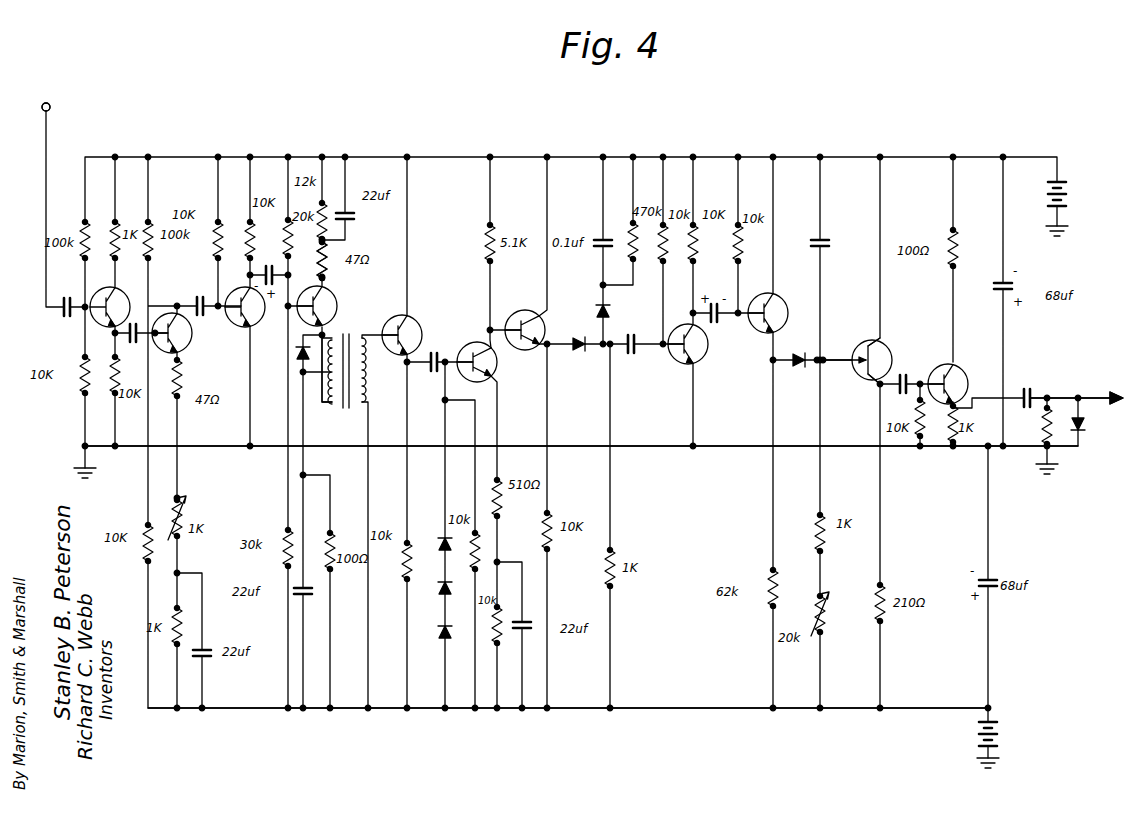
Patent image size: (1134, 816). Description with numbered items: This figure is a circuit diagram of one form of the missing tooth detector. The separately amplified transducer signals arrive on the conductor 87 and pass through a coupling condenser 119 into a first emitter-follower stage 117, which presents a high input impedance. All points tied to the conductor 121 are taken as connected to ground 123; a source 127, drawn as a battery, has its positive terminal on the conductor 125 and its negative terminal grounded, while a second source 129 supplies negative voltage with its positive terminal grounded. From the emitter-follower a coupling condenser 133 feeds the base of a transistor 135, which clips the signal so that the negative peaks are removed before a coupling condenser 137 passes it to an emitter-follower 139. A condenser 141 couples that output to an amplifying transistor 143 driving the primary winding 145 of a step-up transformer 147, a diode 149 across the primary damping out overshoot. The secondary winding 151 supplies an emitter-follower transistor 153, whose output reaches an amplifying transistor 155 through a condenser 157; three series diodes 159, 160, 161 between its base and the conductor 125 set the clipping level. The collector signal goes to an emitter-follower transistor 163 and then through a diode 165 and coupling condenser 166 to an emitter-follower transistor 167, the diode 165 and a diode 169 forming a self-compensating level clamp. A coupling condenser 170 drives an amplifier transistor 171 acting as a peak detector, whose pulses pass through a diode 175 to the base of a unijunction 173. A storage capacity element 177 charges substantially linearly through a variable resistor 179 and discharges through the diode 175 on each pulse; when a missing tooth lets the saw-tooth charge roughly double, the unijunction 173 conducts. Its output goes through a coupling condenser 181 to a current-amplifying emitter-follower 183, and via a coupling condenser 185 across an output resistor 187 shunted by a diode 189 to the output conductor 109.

The conductor 87 is at (46, 150).
The output conductor 109 is at (1098, 397).
The first emitter-follower stage 117 is at (102, 288).
The coupling condenser 119 is at (66, 300).
The conductor 121 is at (120, 448).
The ground 123 is at (86, 478).
The conductor 125 is at (205, 710).
The source 127 is at (998, 736).
The source 129 is at (1066, 194).
The coupling condenser 133 is at (142, 324).
The transistor 135 is at (192, 347).
The coupling condenser 137 is at (199, 296).
The emitter-follower 139 is at (240, 327).
The condenser 141 is at (269, 266).
The amplifying transistor 143 is at (321, 304).
The primary winding 145 is at (326, 278).
The transformer 147 is at (346, 408).
The diode 149 is at (300, 354).
The secondary winding 151 is at (330, 336).
The emitter-follower transistor 153 is at (412, 330).
The amplifying transistor 155 is at (486, 360).
The condenser 157 is at (438, 349).
The diode 159 is at (440, 545).
The diode 160 is at (440, 590).
The diode 161 is at (440, 634).
The transistor 163 is at (535, 328).
The diode 165 is at (579, 352).
The coupling condenser 166 is at (633, 355).
The transistor 167 is at (702, 348).
The diode 169 is at (600, 310).
The coupling condenser 170 is at (715, 303).
The amplifier transistor 171 is at (780, 309).
The unijunction 173 is at (856, 378).
The diode 175 is at (799, 367).
The storage capacity element 177 is at (810, 243).
The variable resistor 179 is at (826, 628).
The coupling condenser 181 is at (904, 374).
The emitter-follower 183 is at (952, 376).
The coupling condenser 185 is at (1030, 388).
The output resistor 187 is at (1044, 428).
The diode 189 is at (1086, 430).